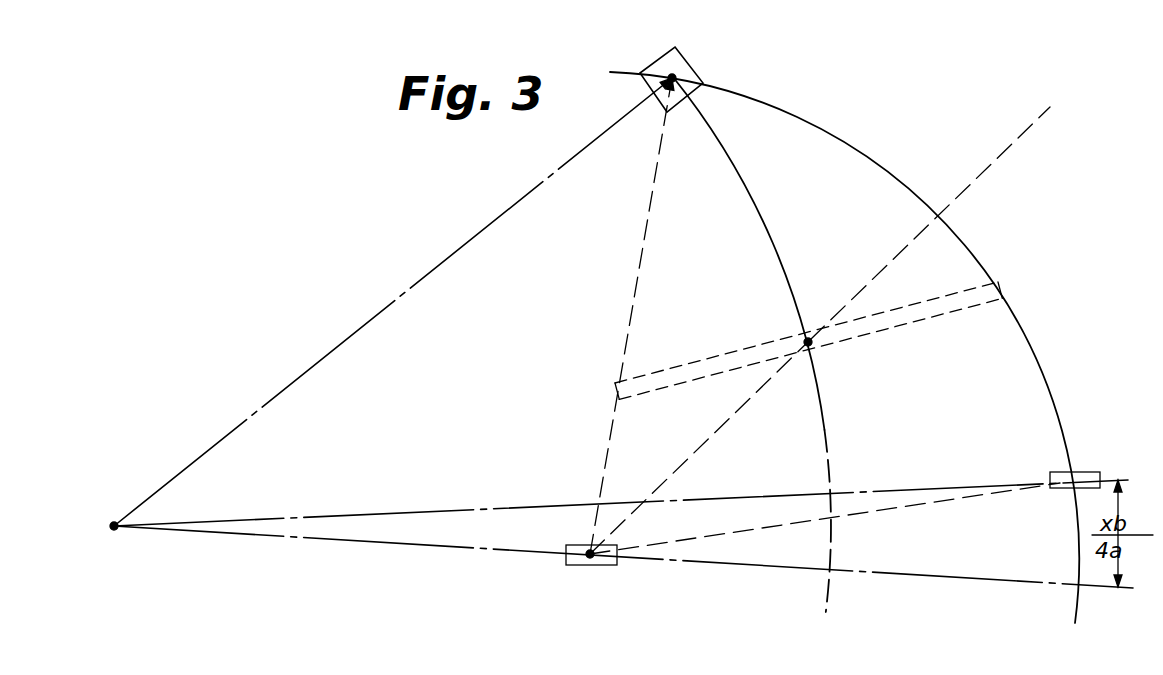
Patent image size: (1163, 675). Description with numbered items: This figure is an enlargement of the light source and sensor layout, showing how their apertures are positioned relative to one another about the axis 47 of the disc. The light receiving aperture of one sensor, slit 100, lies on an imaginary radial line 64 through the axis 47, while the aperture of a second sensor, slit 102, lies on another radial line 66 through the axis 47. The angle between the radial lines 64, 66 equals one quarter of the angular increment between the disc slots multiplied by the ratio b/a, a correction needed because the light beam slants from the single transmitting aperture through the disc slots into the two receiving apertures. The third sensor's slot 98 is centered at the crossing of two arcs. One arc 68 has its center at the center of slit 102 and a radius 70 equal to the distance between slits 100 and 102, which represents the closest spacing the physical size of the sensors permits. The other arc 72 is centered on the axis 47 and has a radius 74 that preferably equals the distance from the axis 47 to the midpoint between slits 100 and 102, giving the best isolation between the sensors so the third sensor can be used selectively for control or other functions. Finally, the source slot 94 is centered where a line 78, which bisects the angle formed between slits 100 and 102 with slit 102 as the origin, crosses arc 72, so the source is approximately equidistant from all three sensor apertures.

The axis 47 is at (117, 522).
The radial line 64 is at (453, 508).
The radial line 66 is at (707, 562).
The arc 68 is at (1017, 317).
The radius 70 is at (703, 535).
The arc 72 is at (777, 248).
The radius 74 is at (373, 310).
The line 78 is at (1033, 122).
The slot 94 is at (853, 342).
The slot 98 is at (697, 68).
The slit 100 is at (1093, 468).
The slit 102 is at (606, 565).